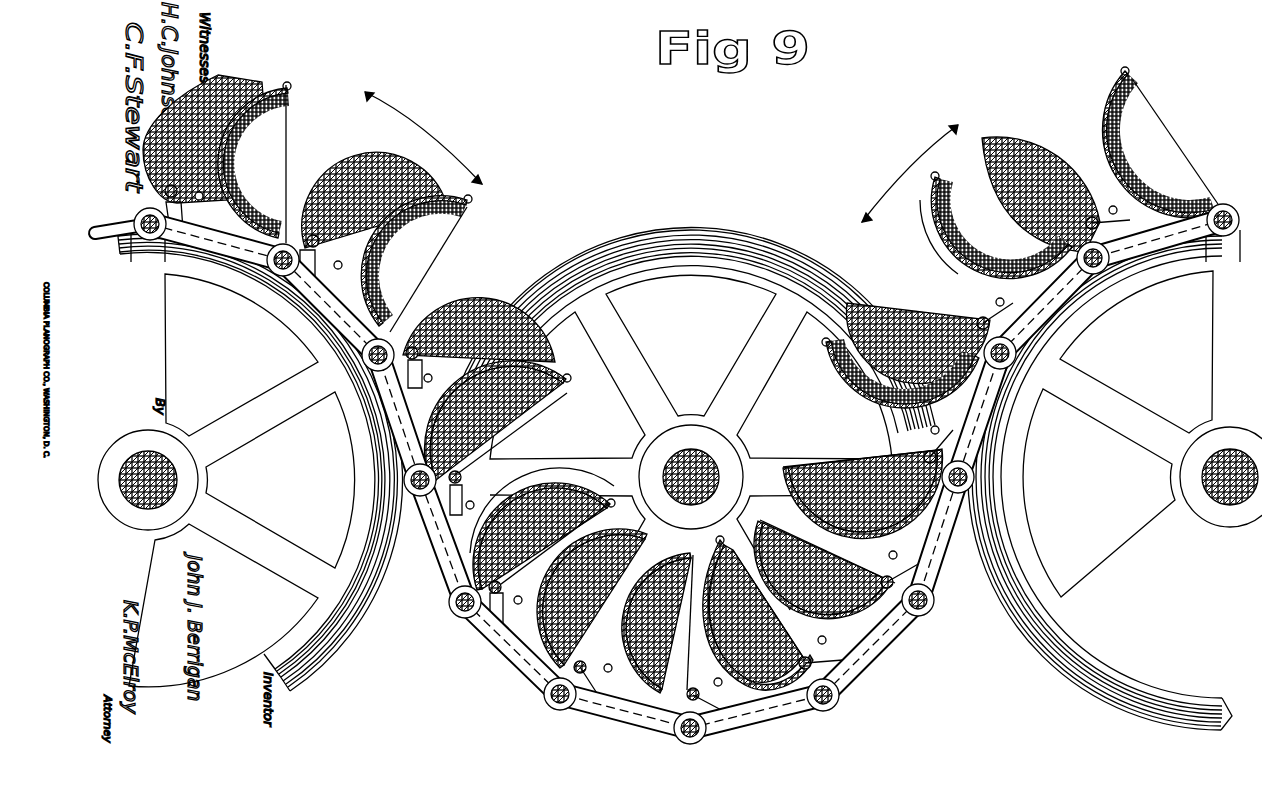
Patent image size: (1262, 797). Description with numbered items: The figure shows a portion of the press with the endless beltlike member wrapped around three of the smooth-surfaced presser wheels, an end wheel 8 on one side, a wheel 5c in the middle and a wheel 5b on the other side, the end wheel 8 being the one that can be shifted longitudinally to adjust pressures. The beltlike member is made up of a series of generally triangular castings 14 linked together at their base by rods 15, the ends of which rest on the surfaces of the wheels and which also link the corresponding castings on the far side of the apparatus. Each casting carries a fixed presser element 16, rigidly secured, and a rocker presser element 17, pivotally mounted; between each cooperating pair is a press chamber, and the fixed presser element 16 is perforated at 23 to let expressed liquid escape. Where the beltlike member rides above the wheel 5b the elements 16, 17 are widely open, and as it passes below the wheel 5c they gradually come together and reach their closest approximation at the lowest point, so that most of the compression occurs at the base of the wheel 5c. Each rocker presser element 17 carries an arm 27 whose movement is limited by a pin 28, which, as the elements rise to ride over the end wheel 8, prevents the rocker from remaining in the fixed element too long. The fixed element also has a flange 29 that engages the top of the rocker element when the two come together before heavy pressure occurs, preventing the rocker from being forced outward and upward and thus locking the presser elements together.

The wheel 5b is at (1080, 325).
The wheel 5c is at (692, 275).
The end wheel 8 is at (265, 305).
The casting 14 is at (446, 250).
The rod 15 is at (420, 492).
The fixed presser element 16 is at (230, 184).
The rocker presser element 17 is at (478, 310).
The perforations 23 is at (382, 228).
The arm 27 is at (404, 388).
The pin 28 is at (364, 272).
The flange 29 is at (470, 206).